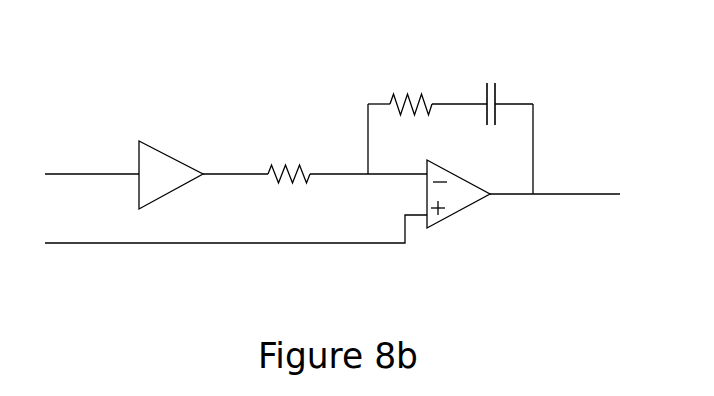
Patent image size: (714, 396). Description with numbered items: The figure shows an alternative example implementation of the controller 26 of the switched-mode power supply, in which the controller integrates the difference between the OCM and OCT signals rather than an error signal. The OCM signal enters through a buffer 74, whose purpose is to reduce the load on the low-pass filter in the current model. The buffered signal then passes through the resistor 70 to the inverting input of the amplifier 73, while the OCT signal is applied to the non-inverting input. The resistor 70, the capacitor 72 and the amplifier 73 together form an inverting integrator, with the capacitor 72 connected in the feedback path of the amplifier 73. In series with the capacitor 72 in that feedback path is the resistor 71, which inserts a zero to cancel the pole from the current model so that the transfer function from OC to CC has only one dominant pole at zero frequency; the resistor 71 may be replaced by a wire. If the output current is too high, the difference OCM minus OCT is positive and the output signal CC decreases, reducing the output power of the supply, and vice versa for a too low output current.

The controller 26 is at (95, 300).
The buffer 74 is at (171, 164).
The resistor 70 is at (289, 176).
The resistor 71 is at (411, 107).
The capacitor 72 is at (496, 113).
The amplifier 73 is at (458, 207).